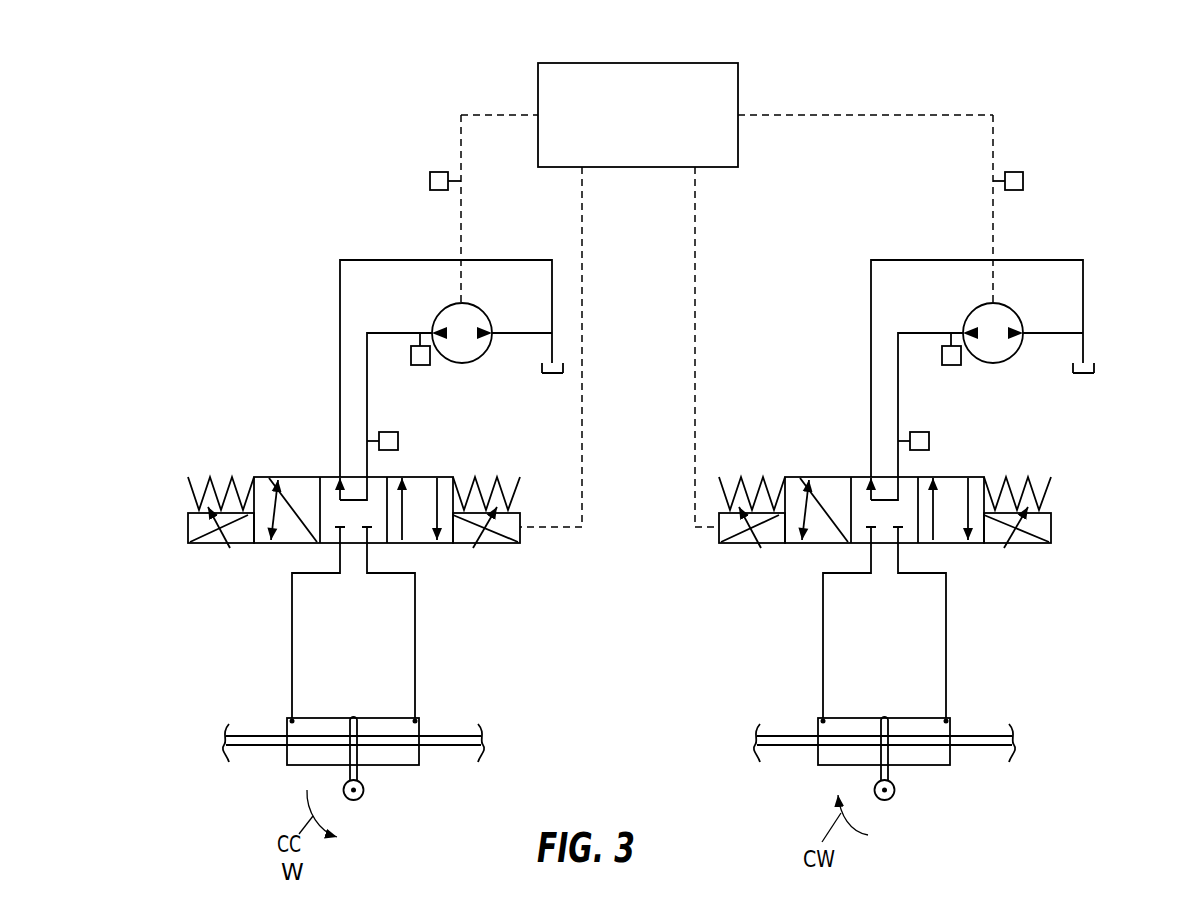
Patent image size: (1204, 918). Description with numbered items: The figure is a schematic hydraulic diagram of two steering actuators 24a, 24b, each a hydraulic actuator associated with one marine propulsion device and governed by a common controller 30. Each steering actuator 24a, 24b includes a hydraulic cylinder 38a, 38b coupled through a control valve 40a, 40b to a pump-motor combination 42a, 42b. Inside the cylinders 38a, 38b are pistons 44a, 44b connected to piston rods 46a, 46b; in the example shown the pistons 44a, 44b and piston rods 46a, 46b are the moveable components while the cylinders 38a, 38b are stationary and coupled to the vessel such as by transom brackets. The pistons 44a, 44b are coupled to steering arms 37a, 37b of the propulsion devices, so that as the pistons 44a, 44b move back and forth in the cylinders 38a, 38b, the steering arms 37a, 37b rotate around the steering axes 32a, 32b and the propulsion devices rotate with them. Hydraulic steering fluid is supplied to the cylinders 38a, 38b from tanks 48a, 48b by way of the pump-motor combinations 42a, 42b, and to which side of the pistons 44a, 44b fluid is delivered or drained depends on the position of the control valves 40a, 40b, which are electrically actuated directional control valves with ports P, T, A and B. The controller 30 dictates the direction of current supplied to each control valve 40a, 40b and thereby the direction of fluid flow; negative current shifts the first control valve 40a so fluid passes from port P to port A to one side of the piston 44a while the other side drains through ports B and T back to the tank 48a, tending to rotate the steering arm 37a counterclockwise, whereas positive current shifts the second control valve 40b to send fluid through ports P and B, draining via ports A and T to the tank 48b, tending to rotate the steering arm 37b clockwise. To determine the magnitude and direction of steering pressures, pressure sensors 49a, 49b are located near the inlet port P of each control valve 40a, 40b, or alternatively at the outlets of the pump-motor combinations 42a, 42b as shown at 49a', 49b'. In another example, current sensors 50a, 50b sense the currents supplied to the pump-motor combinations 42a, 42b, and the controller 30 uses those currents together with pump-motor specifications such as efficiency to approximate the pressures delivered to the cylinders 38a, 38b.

The controller 30 is at (738, 93).
The first steering actuator 24a is at (274, 236).
The second steering actuator 24b is at (1021, 317).
The first current sensor 50a is at (435, 172).
The second current sensor 50b is at (1036, 165).
The first pump-motor combination 42a is at (489, 352).
The second pump-motor combination 42b is at (1008, 357).
The first tank 48a is at (557, 378).
The second tank 48b is at (1076, 403).
The first pressure sensor 49a is at (414, 449).
The second pressure sensor 49b is at (945, 449).
The first pressure sensor 49a' is at (438, 374).
The second pressure sensor 49b' is at (969, 374).
The first control valve 40a is at (300, 466).
The second control valve 40b is at (885, 488).
The first piston 44a is at (353, 716).
The second piston 44b is at (864, 714).
The first piston rod 46a is at (435, 735).
The second piston rod 46b is at (894, 720).
The first hydraulic cylinder 38a is at (300, 768).
The second hydraulic cylinder 38b is at (859, 674).
The first steering arm 37a is at (360, 776).
The second steering arm 37b is at (926, 785).
The first steering axis 32a is at (357, 800).
The second steering axis 32b is at (915, 815).